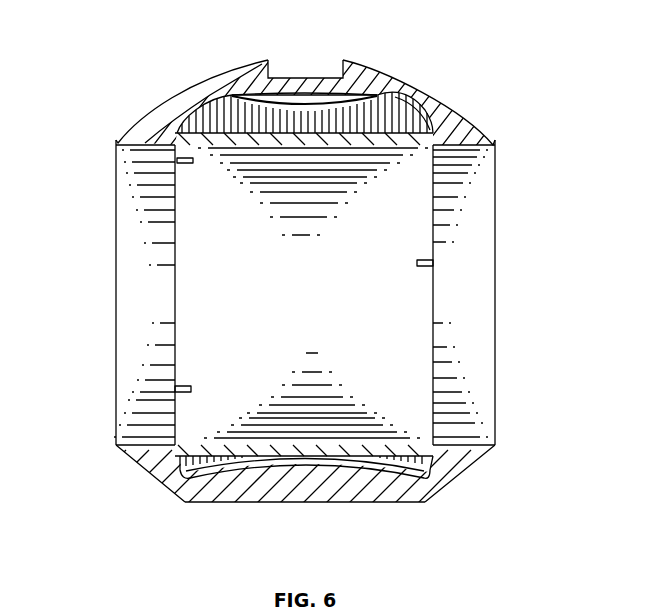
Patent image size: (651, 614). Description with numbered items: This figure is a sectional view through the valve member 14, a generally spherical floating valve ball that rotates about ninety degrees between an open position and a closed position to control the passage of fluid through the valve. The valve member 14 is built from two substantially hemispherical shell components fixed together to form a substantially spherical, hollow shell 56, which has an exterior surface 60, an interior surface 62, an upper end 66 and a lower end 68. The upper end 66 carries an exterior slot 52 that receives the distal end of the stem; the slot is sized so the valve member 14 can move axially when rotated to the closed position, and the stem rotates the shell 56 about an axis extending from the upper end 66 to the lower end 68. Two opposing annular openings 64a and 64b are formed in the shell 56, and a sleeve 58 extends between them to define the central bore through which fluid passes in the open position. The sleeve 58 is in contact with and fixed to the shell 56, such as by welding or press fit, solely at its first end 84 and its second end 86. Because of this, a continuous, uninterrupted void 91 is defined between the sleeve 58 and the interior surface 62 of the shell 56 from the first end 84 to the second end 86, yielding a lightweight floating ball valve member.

The valve member 14 is at (145, 76).
The exterior slot 52 is at (341, 59).
The hollow shell 56 is at (133, 466).
The sleeve 58 is at (200, 146).
The exterior surface 60 is at (126, 132).
The interior surface 62 is at (472, 120).
The annular opening 64a is at (124, 150).
The annular opening 64b is at (491, 150).
The upper end 66 is at (253, 60).
The lower end 68 is at (224, 504).
The first end 84 is at (172, 310).
The second end 86 is at (435, 310).
The void 91 is at (412, 102).